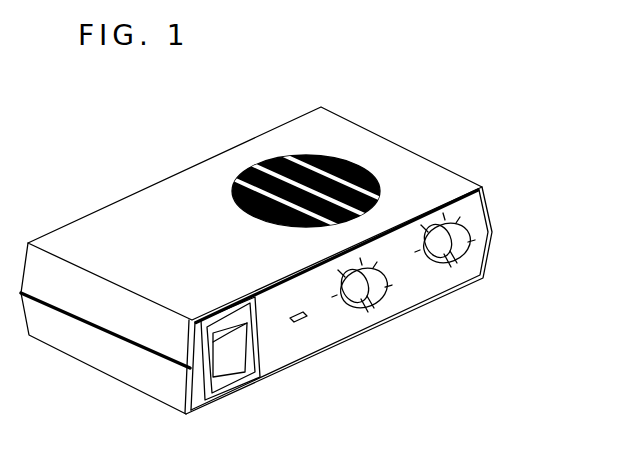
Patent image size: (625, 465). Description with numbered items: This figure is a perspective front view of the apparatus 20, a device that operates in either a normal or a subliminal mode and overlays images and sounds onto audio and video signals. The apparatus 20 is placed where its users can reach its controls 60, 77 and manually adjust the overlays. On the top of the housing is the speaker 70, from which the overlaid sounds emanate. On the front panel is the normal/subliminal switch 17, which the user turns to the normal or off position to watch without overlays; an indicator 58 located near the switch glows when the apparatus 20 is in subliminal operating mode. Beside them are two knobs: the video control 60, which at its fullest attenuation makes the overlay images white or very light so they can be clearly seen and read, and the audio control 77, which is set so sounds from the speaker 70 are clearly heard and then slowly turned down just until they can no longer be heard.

The apparatus 20 is at (411, 120).
The speaker 70 is at (262, 163).
The normal/subliminal switch 17 is at (232, 365).
The indicator 58 is at (307, 313).
The audio control 77 is at (382, 288).
The video control 60 is at (460, 252).